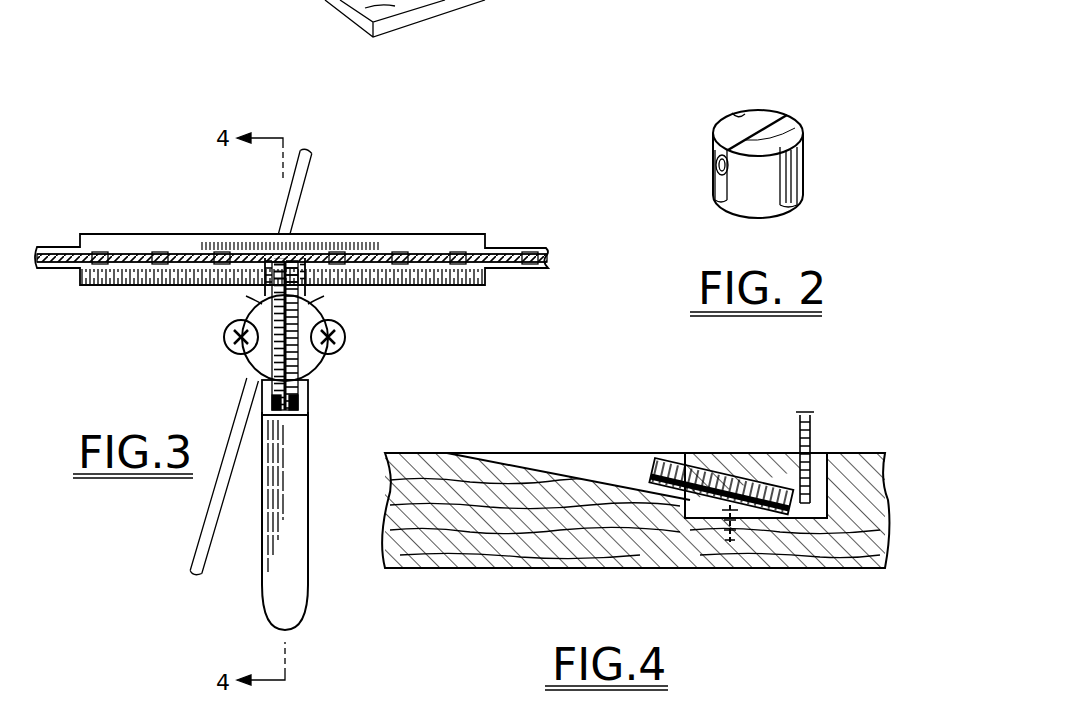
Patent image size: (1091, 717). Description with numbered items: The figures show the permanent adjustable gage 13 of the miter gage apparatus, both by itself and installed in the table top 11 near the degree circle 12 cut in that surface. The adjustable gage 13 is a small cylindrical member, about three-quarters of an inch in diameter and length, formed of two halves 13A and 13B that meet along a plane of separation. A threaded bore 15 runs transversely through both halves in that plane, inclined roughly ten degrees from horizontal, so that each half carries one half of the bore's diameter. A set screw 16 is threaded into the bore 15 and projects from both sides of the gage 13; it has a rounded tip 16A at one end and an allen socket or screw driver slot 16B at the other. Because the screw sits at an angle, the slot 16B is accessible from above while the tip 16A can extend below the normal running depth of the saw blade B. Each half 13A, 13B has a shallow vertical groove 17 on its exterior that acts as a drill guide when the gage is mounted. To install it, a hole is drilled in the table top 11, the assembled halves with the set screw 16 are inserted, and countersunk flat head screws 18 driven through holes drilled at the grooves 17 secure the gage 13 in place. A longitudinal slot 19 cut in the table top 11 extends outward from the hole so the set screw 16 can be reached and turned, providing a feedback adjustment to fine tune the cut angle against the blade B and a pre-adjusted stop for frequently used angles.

In FIG. 3, the saw blade B is at (395, 255).
In FIG. 4, the table top 11 is at (458, 553).
In FIG. 3, the degree circle 12 is at (307, 192).
In FIG. 3, the adjustable gage 13 is at (235, 311).
In FIG. 2, the adjustable gage 13 is at (824, 156).
In FIG. 4, the adjustable gage 13 is at (710, 446).
In FIG. 3, the gage half 13A is at (242, 358).
In FIG. 2, the gage half 13A is at (740, 118).
In FIG. 3, the gage half 13B is at (322, 360).
In FIG. 2, the gage half 13B is at (787, 133).
In FIG. 3, the threaded bore 15 is at (305, 312).
In FIG. 2, the threaded bore 15 is at (717, 174).
In FIG. 4, the threaded bore 15 is at (758, 472).
In FIG. 3, the set screw 16 is at (264, 396).
In FIG. 4, the set screw 16 is at (672, 462).
In FIG. 3, the rounded tip 16A is at (268, 255).
In FIG. 4, the rounded tip 16A is at (778, 533).
In FIG. 3, the screw driver slot 16B is at (300, 428).
In FIG. 4, the screw driver slot 16B is at (655, 470).
In FIG. 2, the vertical groove 17 is at (737, 120).
In FIG. 3, the flat head screws 18 is at (223, 338).
In FIG. 4, the flat head screws 18 is at (728, 460).
In FIG. 3, the longitudinal slot 19 is at (310, 505).
In FIG. 4, the longitudinal slot 19 is at (548, 460).